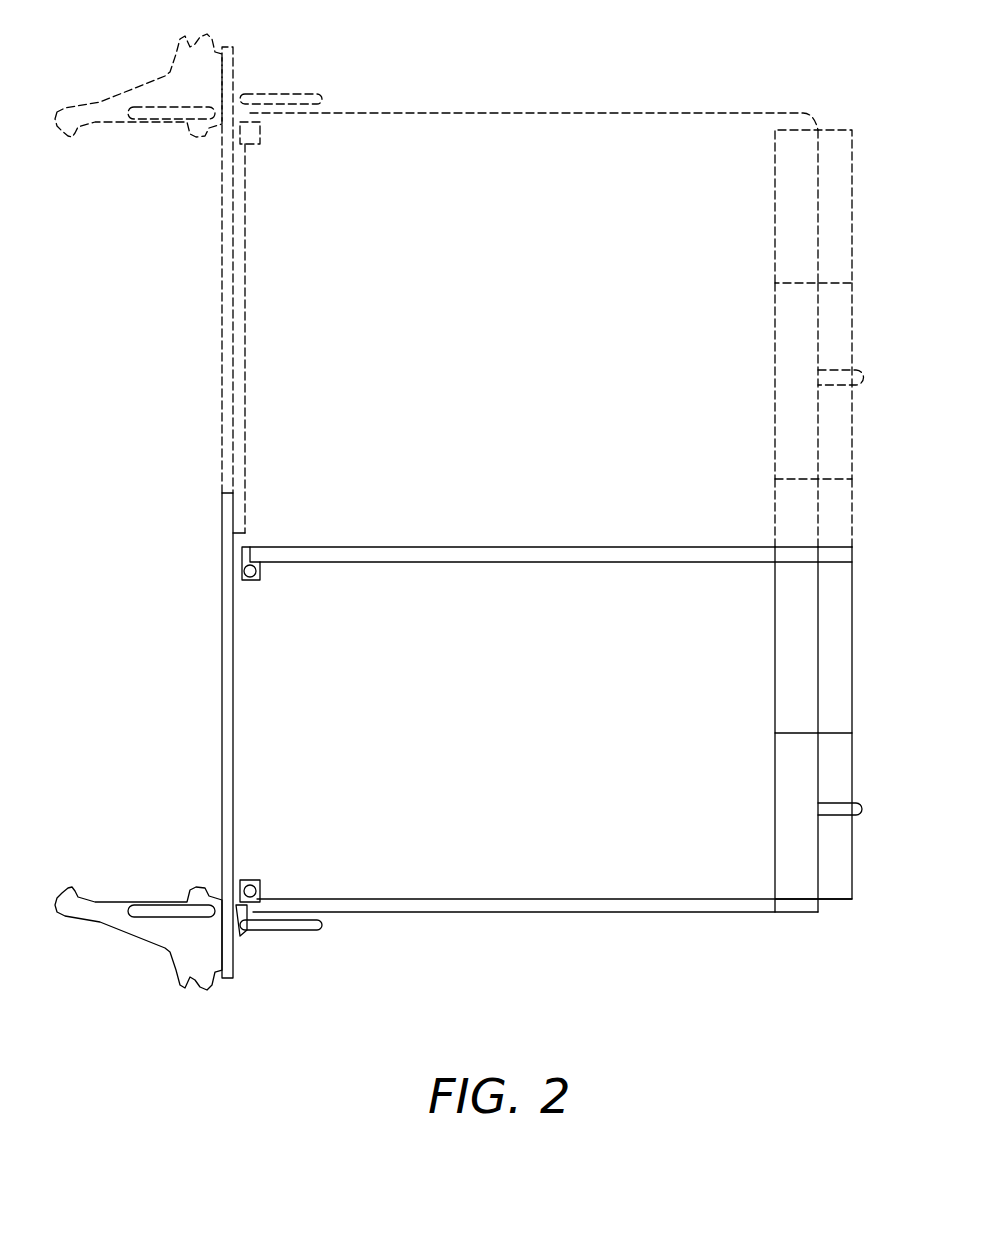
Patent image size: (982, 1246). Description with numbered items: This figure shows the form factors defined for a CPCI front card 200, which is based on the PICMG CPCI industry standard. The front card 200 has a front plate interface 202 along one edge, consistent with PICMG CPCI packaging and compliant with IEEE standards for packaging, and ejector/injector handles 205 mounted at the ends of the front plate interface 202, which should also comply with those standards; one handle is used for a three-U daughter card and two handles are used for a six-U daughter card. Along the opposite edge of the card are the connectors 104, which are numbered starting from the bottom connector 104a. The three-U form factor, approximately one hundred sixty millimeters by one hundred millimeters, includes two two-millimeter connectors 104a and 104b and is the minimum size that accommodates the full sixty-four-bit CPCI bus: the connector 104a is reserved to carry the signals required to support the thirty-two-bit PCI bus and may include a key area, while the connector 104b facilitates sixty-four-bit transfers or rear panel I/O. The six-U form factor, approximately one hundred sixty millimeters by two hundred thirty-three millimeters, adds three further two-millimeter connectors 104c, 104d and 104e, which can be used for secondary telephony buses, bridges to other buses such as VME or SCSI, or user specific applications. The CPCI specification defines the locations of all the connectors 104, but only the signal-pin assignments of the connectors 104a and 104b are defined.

The front card 200 is at (525, 868).
The front plate interface 202 is at (222, 600).
The ejector/injector handles 205 is at (118, 90).
The connectors 104 is at (766, 521).
The bottom connector 104a is at (787, 800).
The connector 104b is at (787, 637).
The connector 104c is at (787, 503).
The connector 104d is at (787, 354).
The connector 104e is at (787, 202).